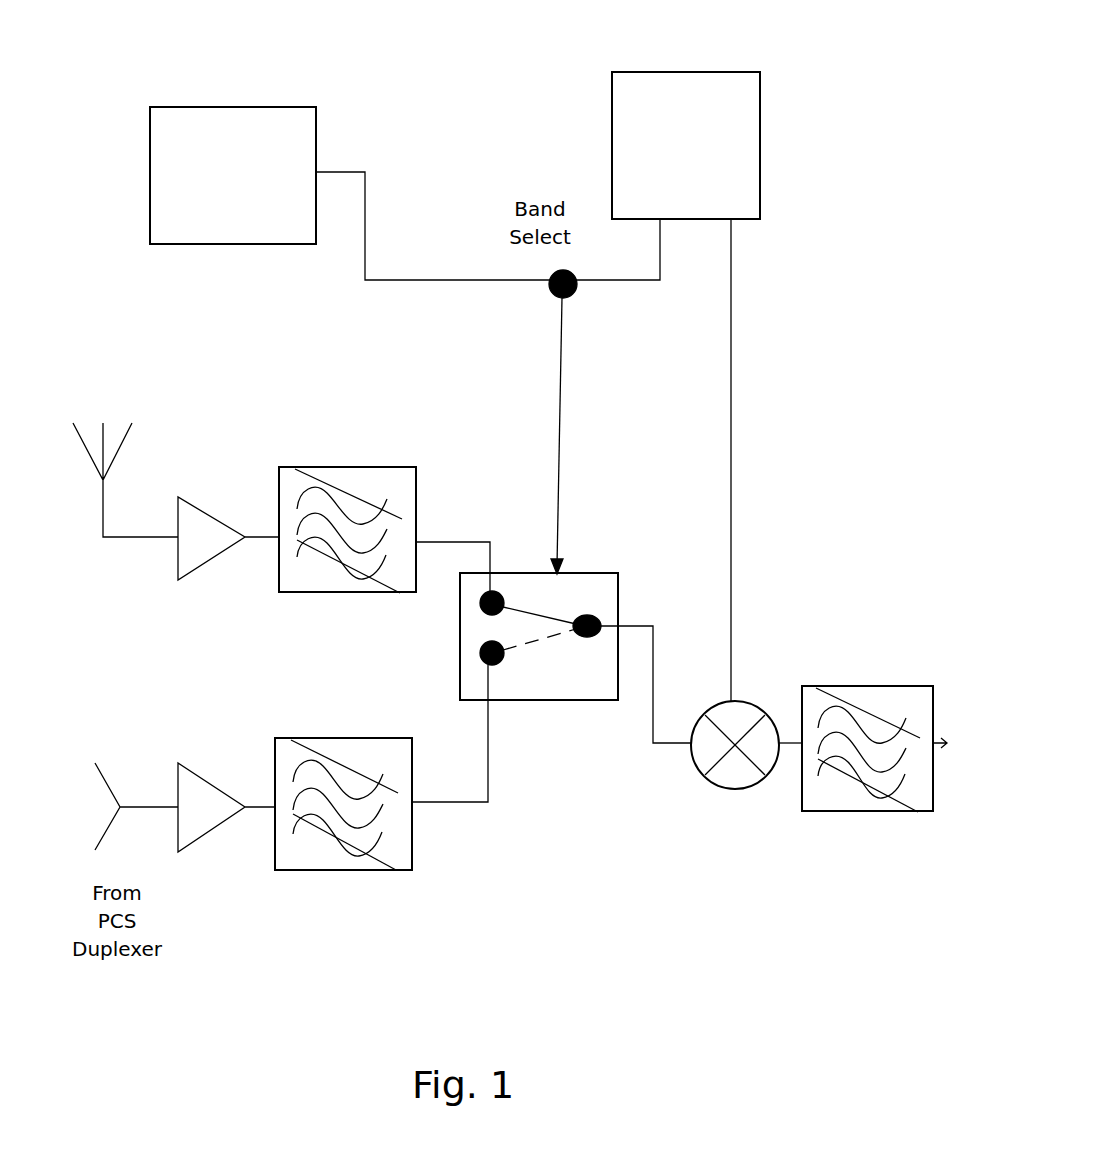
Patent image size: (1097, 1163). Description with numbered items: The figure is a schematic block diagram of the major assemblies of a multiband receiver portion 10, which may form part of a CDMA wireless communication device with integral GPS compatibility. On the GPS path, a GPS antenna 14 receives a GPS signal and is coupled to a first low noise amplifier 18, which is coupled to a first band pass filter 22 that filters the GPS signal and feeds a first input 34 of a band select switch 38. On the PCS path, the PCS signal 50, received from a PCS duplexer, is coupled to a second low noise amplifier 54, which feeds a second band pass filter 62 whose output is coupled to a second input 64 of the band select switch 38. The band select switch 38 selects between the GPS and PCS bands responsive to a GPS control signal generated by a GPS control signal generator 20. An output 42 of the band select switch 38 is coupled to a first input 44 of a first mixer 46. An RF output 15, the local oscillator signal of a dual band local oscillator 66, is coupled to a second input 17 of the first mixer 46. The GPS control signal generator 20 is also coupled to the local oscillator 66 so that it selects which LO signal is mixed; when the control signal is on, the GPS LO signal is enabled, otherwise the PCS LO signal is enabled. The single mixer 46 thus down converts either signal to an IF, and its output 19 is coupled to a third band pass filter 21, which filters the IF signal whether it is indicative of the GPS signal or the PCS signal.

The receiver portion 10 is at (762, 92).
The GPS antenna 14 is at (118, 453).
The RF output 15 is at (732, 288).
The second input 17 is at (732, 527).
The first low noise amplifier 18 is at (203, 511).
The output 19 is at (784, 748).
The GPS control signal generator 20 is at (286, 107).
The third band pass filter 21 is at (845, 687).
The first band pass filter 22 is at (387, 466).
The first input 34 is at (490, 550).
The band select switch 38 is at (586, 573).
The output 42 is at (639, 627).
The first input 44 is at (672, 747).
The first mixer 46 is at (745, 702).
The PCS signal 50 is at (102, 836).
The second low noise amplifier 54 is at (202, 780).
The second band pass filter 62 is at (340, 871).
The second input 64 is at (489, 722).
The dual band local oscillator 66 is at (760, 156).